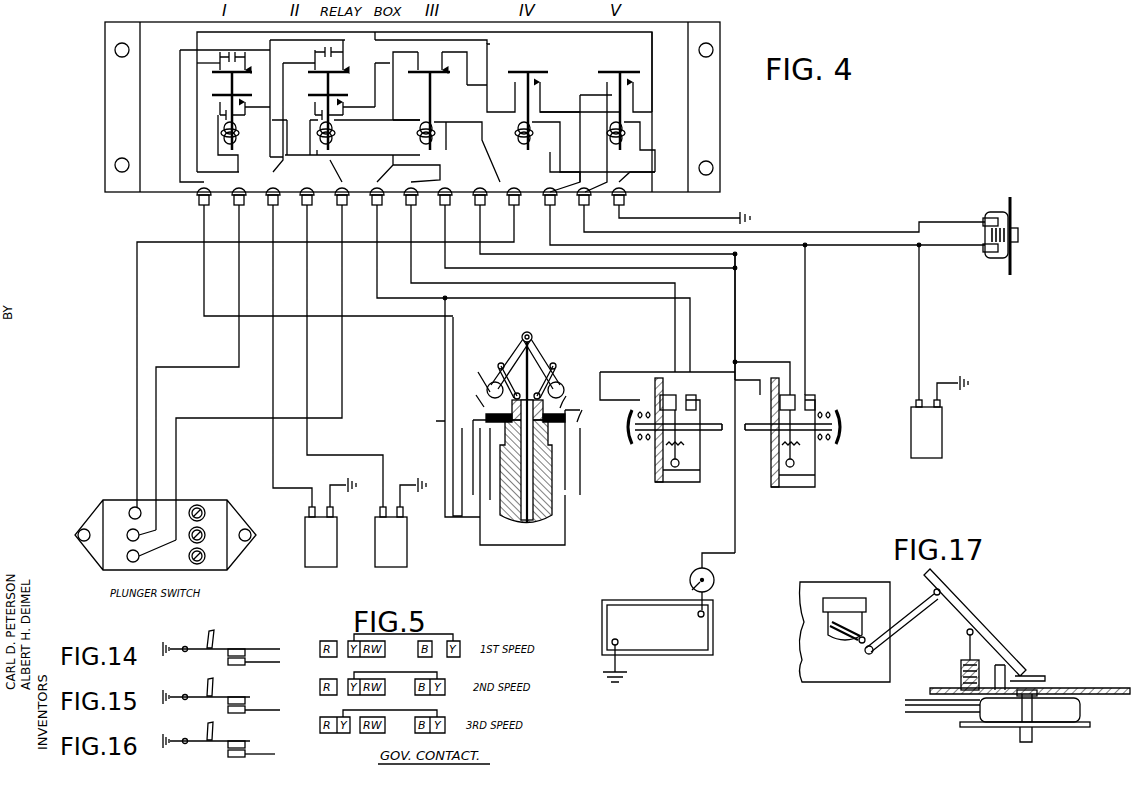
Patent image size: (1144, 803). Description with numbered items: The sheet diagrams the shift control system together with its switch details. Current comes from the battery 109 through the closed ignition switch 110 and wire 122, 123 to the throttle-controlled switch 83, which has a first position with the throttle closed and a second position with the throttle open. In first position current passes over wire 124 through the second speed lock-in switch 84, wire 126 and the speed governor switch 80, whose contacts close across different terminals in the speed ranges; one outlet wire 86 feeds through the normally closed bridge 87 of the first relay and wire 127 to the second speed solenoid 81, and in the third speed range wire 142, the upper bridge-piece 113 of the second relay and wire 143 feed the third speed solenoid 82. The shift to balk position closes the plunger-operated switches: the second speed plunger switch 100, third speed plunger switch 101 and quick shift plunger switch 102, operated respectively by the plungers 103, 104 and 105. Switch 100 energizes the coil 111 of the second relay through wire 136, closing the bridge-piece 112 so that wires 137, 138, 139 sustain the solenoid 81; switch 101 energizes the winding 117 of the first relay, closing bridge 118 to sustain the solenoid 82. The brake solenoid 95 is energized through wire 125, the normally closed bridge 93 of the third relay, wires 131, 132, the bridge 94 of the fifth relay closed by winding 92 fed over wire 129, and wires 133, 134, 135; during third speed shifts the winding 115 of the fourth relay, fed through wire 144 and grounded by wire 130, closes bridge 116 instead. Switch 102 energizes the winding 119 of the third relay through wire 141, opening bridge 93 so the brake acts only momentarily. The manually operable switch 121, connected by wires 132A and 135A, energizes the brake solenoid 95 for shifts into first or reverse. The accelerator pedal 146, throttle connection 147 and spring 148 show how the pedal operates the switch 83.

In FIG. 4, the speed governor switch 80 is at (536, 344).
In FIG. 4, the second speed solenoid 81 is at (328, 541).
In FIG. 4, the third speed solenoid 82 is at (398, 541).
In FIG. 4, the throttle-controlled switch 83 is at (812, 388).
In FIG. 17, the throttle-controlled switch 83 is at (1077, 711).
In FIG. 4, the second speed lock-in switch 84 is at (656, 462).
In FIG. 4, the outlet wire of the governor 86 is at (513, 298).
In FIG. 4, the bridge of relay I 87 is at (230, 76).
In FIG. 4, the winding of relay V 92 is at (628, 138).
In FIG. 4, the bridge of relay III 93 is at (440, 78).
In FIG. 4, the bridge of relay V 94 is at (629, 68).
In FIG. 4, the brake solenoid 95 is at (936, 437).
In FIG. 4, the second speed plunger switch 100 is at (126, 558).
In FIG. 16, the second speed plunger switch 100 is at (230, 753).
In FIG. 4, the third speed plunger switch 101 is at (126, 535).
In FIG. 15, the third speed plunger switch 101 is at (230, 710).
In FIG. 4, the quick shift plunger switch 102 is at (128, 509).
In FIG. 14, the quick shift plunger switch 102 is at (230, 662).
In FIG. 16, the second speed plunger 103 is at (216, 733).
In FIG. 15, the third speed plunger 104 is at (218, 690).
In FIG. 14, the quick shift plunger 105 is at (216, 638).
In FIG. 4, the battery 109 is at (650, 608).
In FIG. 4, the ignition switch 110 is at (688, 580).
In FIG. 4, the coil of relay II 111 is at (340, 134).
In FIG. 4, the bridge-piece of relay II 112 is at (340, 96).
In FIG. 4, the upper bridge-piece of relay II 113 is at (343, 70).
In FIG. 4, the winding of relay IV 115 is at (520, 133).
In FIG. 4, the bridge of relay IV 116 is at (526, 70).
In FIG. 4, the winding of relay I 117 is at (236, 133).
In FIG. 4, the bridge of relay I 118 is at (236, 95).
In FIG. 4, the winding of relay III 119 is at (436, 134).
In FIG. 4, the manually operable switch 121 is at (992, 210).
In FIG. 4, the wire 122 is at (734, 328).
In FIG. 4, the wire 123 is at (748, 358).
In FIG. 17, the wire 123 is at (900, 702).
In FIG. 4, the wire 124 is at (763, 362).
In FIG. 17, the wire 124 is at (926, 723).
In FIG. 4, the wire 125 is at (676, 284).
In FIG. 4, the wire 126 is at (642, 370).
In FIG. 4, the wire 127 is at (196, 111).
In FIG. 4, the wire 129 is at (645, 66).
In FIG. 4, the wire 130 is at (632, 170).
In FIG. 4, the wire 131 is at (478, 86).
In FIG. 4, the wire 132 is at (575, 95).
In FIG. 4, the wire 132A is at (818, 211).
In FIG. 4, the wire 133 is at (630, 102).
In FIG. 4, the wire 134 is at (553, 152).
In FIG. 4, the wire 135 is at (920, 304).
In FIG. 4, the wire 135A is at (957, 248).
In FIG. 4, the wire 136 is at (342, 351).
In FIG. 4, the wire 137 is at (812, 306).
In FIG. 17, the wire 137 is at (915, 688).
In FIG. 4, the wire 138 is at (424, 160).
In FIG. 4, the wire 139 is at (317, 155).
In FIG. 4, the wire 141 is at (530, 220).
In FIG. 4, the wire 142 is at (179, 140).
In FIG. 4, the wire 143 is at (305, 371).
In FIG. 4, the wire 144 is at (480, 55).
In FIG. 17, the accelerator pedal 146 is at (963, 612).
In FIG. 17, the carburetor throttle 147 is at (822, 614).
In FIG. 17, the spring 148 is at (960, 660).